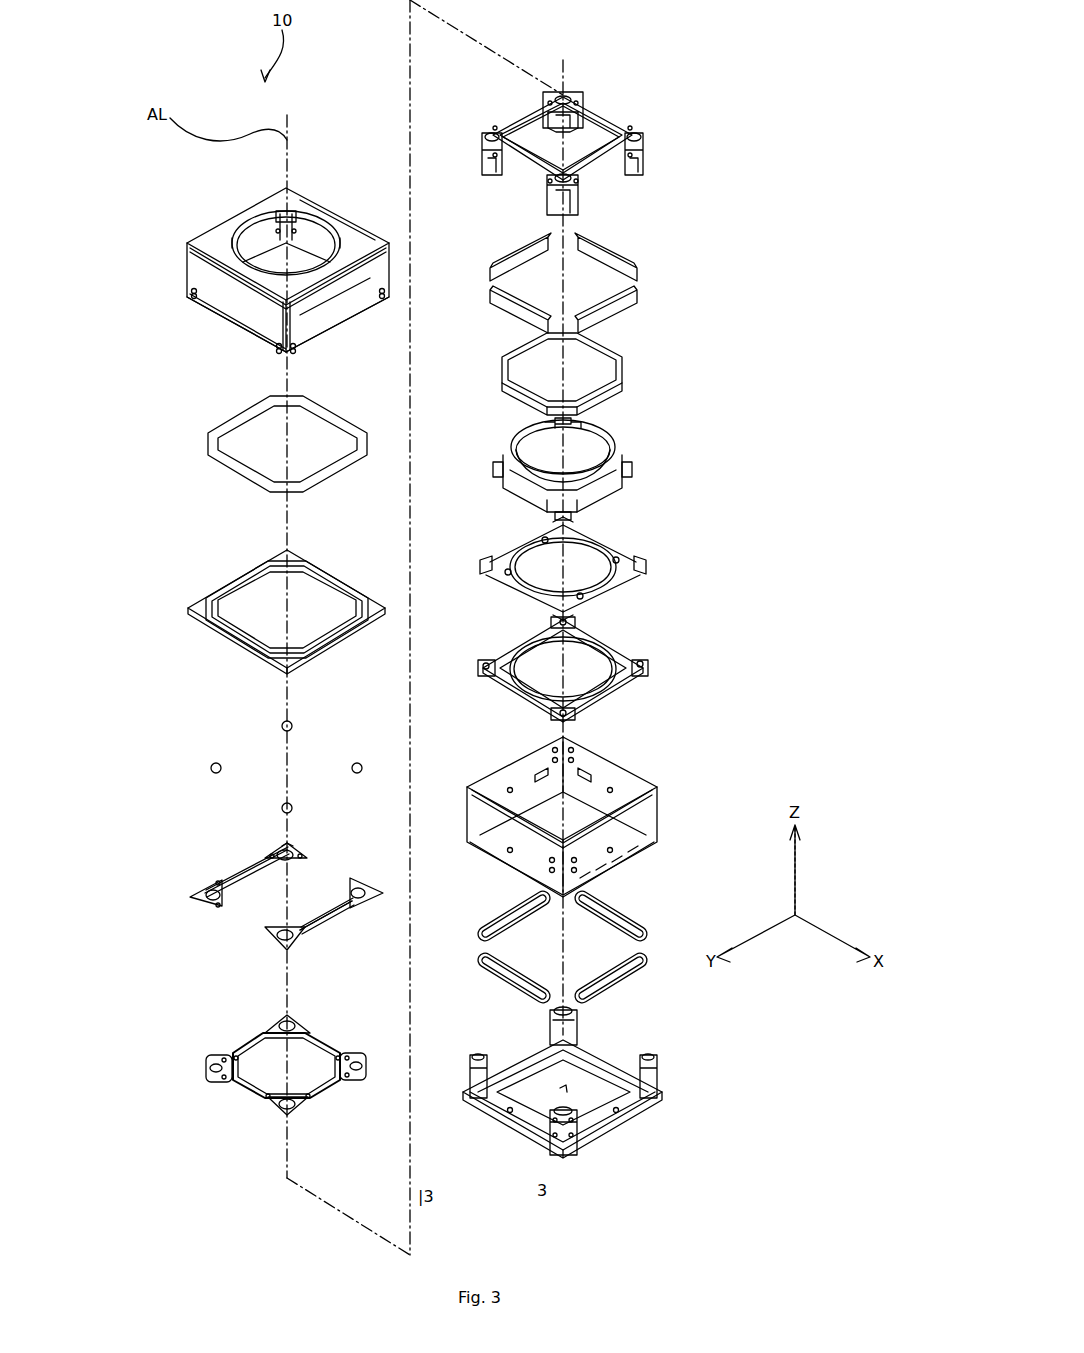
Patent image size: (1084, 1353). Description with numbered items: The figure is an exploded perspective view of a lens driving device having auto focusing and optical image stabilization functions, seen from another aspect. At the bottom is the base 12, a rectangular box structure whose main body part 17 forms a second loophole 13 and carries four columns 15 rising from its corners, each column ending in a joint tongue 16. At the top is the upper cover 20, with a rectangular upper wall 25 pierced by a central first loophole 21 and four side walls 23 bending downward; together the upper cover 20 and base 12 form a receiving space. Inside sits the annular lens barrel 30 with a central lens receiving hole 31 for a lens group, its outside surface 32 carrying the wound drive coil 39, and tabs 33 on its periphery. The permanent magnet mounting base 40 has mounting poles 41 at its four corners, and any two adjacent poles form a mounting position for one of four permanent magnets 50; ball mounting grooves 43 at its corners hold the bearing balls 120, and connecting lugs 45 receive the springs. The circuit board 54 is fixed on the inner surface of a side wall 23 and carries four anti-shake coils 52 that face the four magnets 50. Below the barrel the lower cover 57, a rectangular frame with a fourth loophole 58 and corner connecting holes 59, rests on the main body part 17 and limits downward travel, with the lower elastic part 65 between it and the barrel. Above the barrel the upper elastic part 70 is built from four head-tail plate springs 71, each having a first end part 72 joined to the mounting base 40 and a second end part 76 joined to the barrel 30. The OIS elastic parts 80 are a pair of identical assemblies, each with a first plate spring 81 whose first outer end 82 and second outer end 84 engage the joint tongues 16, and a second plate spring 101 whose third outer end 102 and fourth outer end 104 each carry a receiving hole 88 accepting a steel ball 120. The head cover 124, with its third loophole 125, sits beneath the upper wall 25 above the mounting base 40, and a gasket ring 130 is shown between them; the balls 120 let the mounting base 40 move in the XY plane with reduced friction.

The base 12 is at (653, 1126).
The second loophole 13 is at (575, 1094).
The column 15 is at (570, 1032).
The joint tongue 16 is at (578, 1015).
The main body part 17 is at (530, 1068).
The upper cover 20 is at (165, 276).
The first loophole 21 is at (282, 244).
The side wall 23 is at (342, 312).
The upper wall 25 is at (360, 240).
The lens barrel 30 is at (642, 450).
The lens receiving hole 31 is at (545, 452).
The outside surface 32 is at (598, 500).
The tabs 33 is at (575, 420).
The drive coil 39 is at (622, 370).
The permanent magnet mounting base 40 is at (630, 108).
The mounting pole 41 is at (575, 102).
The ball mounting groove 43 is at (565, 95).
The connecting lug 45 is at (553, 110).
The permanent magnet 50 is at (610, 252).
The anti-shake coil 52 is at (508, 903).
The circuit board 54 is at (687, 806).
The lower cover 57 is at (630, 696).
The fourth loophole 58 is at (558, 660).
The connecting hole 59 is at (645, 665).
The lower elastic part 65 is at (624, 600).
The upper elastic part 70 is at (181, 1075).
The plate spring 71 is at (240, 1025).
The first end part 72 is at (300, 1020).
The second end part 76 is at (212, 1060).
The OIS elastic part 80 is at (174, 915).
The first plate spring 81 is at (229, 860).
The first outer end 82 is at (190, 893).
The second outer end 84 is at (283, 842).
The receiving hole 88 is at (295, 860).
The second plate spring 101 is at (262, 876).
The third outer end 102 is at (215, 908).
The fourth outer end 104 is at (275, 850).
The bearing ball 120 is at (281, 724).
The head cover 124 is at (200, 598).
The third loophole 125 is at (310, 604).
The gasket ring 130 is at (235, 417).